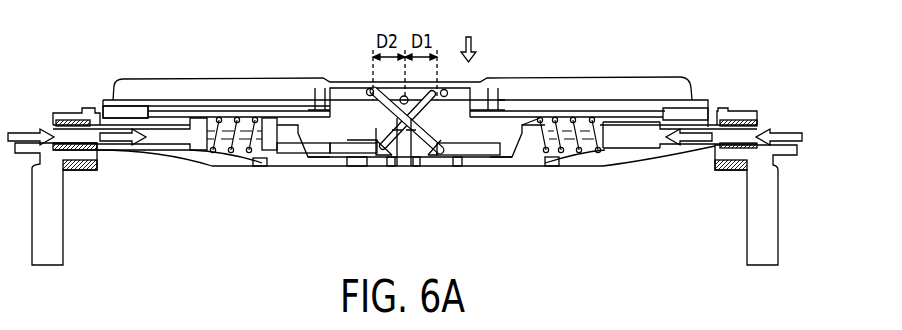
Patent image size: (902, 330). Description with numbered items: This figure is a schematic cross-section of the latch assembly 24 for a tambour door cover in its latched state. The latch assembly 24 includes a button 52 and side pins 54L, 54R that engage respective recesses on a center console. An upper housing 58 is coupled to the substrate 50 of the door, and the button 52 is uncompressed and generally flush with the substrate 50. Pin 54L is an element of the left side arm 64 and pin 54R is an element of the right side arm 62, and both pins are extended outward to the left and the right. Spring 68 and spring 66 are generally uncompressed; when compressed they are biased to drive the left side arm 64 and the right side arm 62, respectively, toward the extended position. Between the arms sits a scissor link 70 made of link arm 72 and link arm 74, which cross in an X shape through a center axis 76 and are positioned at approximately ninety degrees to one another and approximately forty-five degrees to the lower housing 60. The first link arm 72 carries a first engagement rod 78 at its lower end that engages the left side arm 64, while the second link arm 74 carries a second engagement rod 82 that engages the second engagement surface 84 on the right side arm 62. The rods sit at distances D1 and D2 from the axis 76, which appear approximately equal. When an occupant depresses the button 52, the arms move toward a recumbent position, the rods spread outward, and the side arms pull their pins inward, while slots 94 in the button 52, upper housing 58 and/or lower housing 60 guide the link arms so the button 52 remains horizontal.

The latch assembly 24 is at (246, 67).
The substrate 50 is at (200, 88).
The button 52 is at (335, 87).
The pin 54L is at (53, 128).
The pin 54R is at (758, 128).
The upper housing 58 is at (165, 108).
The lower housing 60 is at (172, 152).
The right side arm 62 is at (533, 160).
The left side arm 64 is at (272, 158).
The spring 66 is at (580, 152).
The spring 68 is at (230, 165).
The scissor link 70 is at (398, 155).
The link arm 72 is at (447, 155).
The link arm 74 is at (383, 152).
The center axis 76 is at (488, 97).
The first engagement rod 78 is at (430, 155).
The second engagement rod 82 is at (355, 152).
The second engagement surface 84 is at (296, 160).
The slots 94 is at (368, 91).